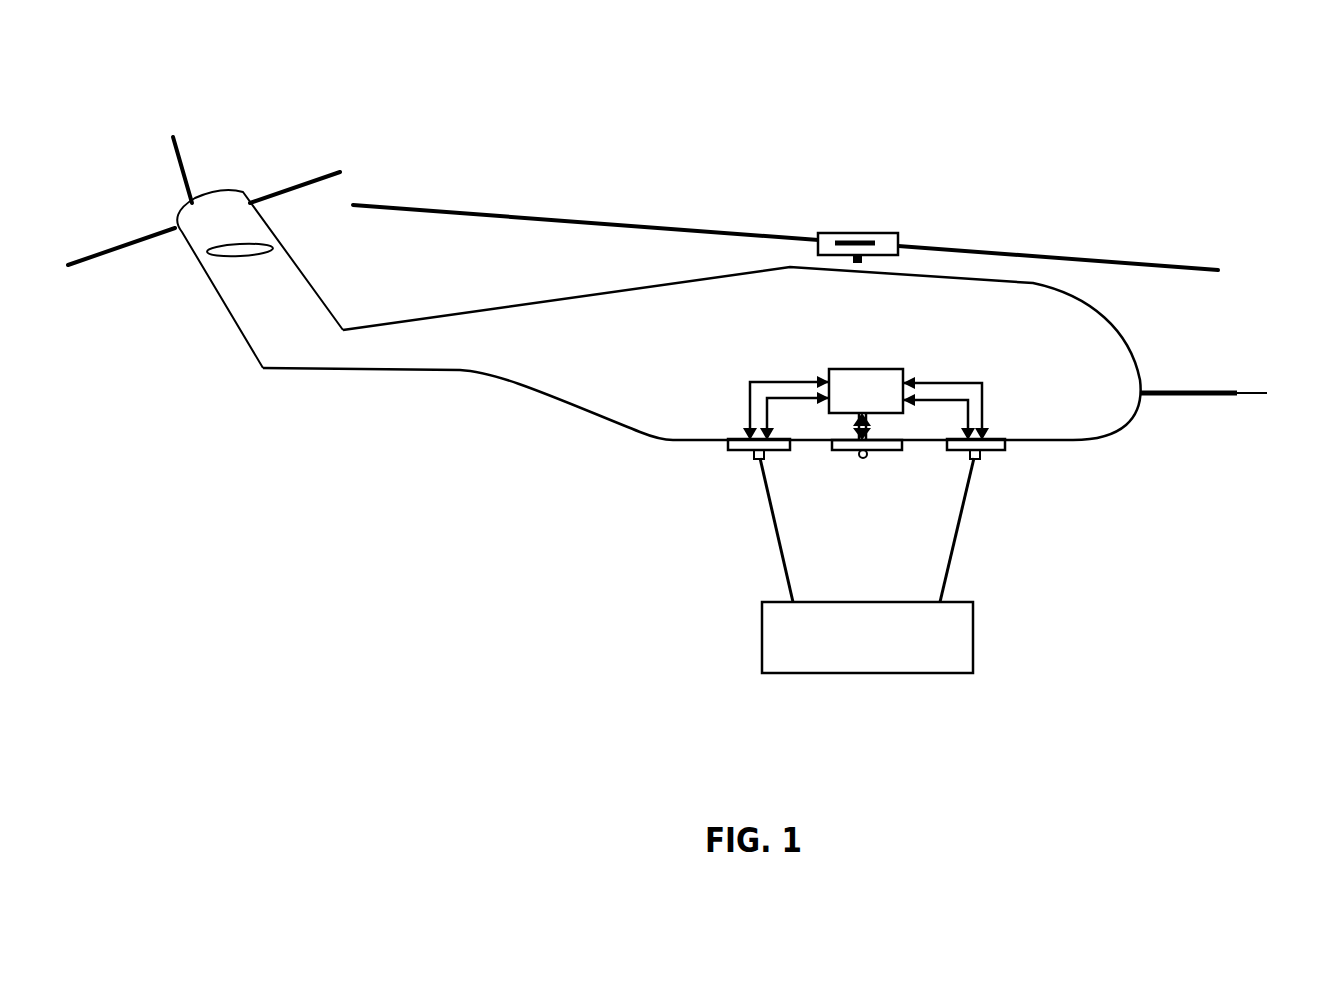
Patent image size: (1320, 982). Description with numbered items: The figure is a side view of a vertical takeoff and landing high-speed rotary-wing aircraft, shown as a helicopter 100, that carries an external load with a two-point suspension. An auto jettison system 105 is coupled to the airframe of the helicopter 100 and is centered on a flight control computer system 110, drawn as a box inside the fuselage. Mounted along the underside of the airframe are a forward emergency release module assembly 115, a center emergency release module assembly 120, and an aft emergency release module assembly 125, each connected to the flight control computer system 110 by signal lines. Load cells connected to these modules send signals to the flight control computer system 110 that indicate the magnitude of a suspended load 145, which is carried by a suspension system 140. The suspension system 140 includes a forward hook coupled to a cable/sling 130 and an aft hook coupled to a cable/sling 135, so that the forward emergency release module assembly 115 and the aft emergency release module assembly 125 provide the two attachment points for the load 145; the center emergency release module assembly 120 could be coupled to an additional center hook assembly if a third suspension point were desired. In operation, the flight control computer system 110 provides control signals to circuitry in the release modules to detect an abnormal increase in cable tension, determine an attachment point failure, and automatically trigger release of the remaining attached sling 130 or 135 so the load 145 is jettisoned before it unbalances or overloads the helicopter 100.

The helicopter 100 is at (1030, 283).
The auto jettison system 105 is at (922, 322).
The flight control computer system 110 is at (850, 369).
The forward emergency release module assembly 115 is at (993, 433).
The center emergency release module assembly 120 is at (903, 447).
The aft emergency release module assembly 125 is at (748, 449).
The forward cable/sling 130 is at (952, 570).
The aft cable/sling 135 is at (783, 558).
The suspension system 140 is at (1112, 461).
The suspended load 145 is at (900, 673).